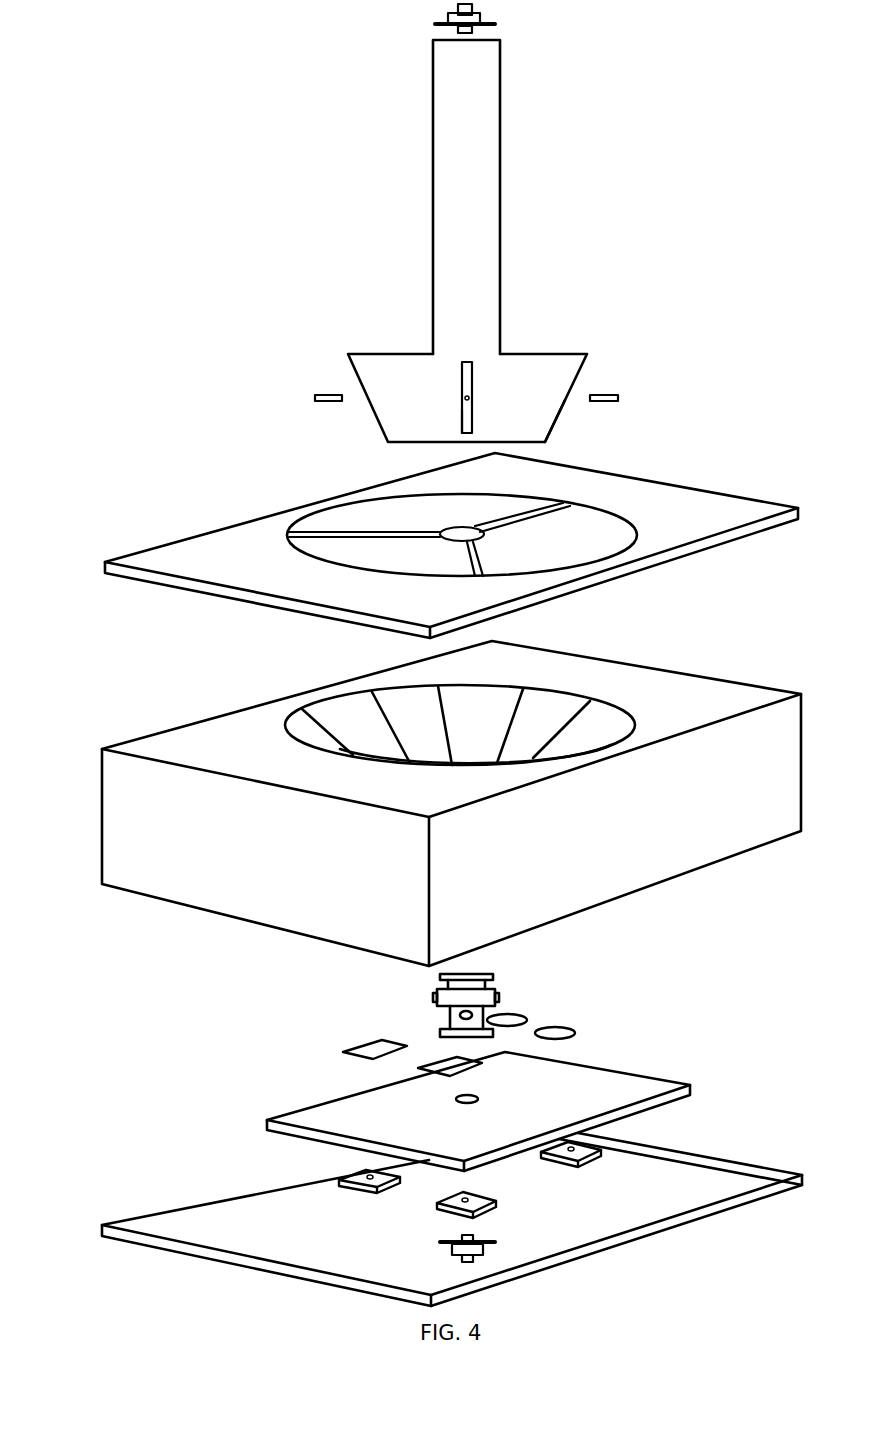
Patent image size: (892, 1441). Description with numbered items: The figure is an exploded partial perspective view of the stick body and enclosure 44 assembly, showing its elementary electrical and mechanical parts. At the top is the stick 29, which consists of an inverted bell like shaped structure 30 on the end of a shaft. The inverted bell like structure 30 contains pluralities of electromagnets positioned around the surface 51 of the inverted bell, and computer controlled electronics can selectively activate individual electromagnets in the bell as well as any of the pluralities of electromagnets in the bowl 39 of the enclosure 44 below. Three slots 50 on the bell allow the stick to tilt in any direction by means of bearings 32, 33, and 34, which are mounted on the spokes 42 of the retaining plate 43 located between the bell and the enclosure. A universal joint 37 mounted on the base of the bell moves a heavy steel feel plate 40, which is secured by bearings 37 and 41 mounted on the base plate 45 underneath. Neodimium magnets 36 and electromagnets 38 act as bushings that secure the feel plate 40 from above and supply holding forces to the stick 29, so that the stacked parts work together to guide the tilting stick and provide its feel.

The stick 29 is at (457, 118).
The inverted bell like shaped structure 30 is at (410, 372).
The bearing 32 is at (483, 387).
The bearing 33 is at (324, 375).
The bearing 34 is at (631, 388).
The slot 50 is at (450, 423).
The surface of the inverted bell 51 is at (539, 428).
The spokes 42 is at (362, 522).
The retaining plate 43 is at (681, 503).
The bowl 39 is at (602, 721).
The enclosure 44 is at (124, 845).
The universal joint 37 is at (412, 997).
The neodimium magnets 36 is at (506, 1008).
The electromagnets 38 is at (356, 1034).
The feel plate 40 is at (369, 1123).
The base plate 45 is at (714, 1171).
The bearing 41 is at (600, 1164).